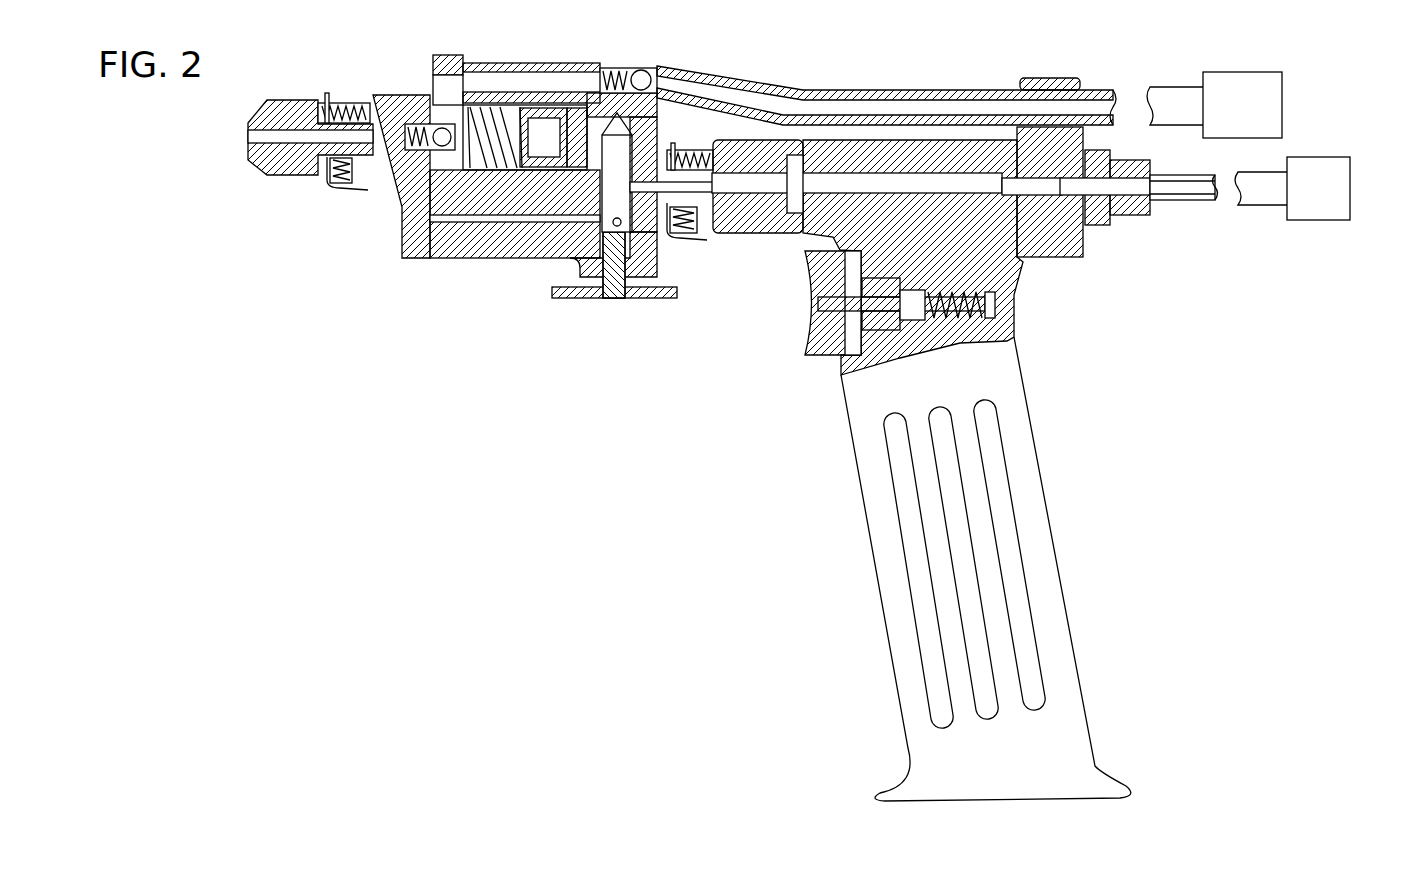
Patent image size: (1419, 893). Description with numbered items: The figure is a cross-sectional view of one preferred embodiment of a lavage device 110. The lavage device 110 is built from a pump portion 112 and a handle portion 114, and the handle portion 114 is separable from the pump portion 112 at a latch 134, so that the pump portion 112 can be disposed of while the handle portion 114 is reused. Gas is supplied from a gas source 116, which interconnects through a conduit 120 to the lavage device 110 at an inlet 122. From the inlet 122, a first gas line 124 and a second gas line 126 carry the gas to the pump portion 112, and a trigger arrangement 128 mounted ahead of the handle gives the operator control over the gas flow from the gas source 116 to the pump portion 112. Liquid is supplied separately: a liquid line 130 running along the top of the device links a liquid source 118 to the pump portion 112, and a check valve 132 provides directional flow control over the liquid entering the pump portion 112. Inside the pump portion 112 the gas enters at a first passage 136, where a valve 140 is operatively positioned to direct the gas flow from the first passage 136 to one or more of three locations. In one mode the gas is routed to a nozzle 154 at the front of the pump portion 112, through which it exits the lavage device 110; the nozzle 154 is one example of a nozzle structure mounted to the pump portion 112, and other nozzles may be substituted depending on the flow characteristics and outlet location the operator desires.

The lavage device 110 is at (598, 415).
The pump portion 112 is at (519, 66).
The handle portion 114 is at (1030, 429).
The gas source 116 is at (1313, 155).
The liquid source 118 is at (1280, 70).
The conduit 120 is at (1260, 205).
The inlet 122 is at (1135, 218).
The first gas line 124 is at (1017, 238).
The second gas line 126 is at (955, 243).
The trigger arrangement 128 is at (820, 359).
The liquid line 130 is at (945, 90).
The check valve 132 is at (658, 76).
The latch 134 is at (702, 242).
The first passage 136 is at (768, 177).
The valve 140 is at (605, 299).
The nozzle 154 is at (295, 173).